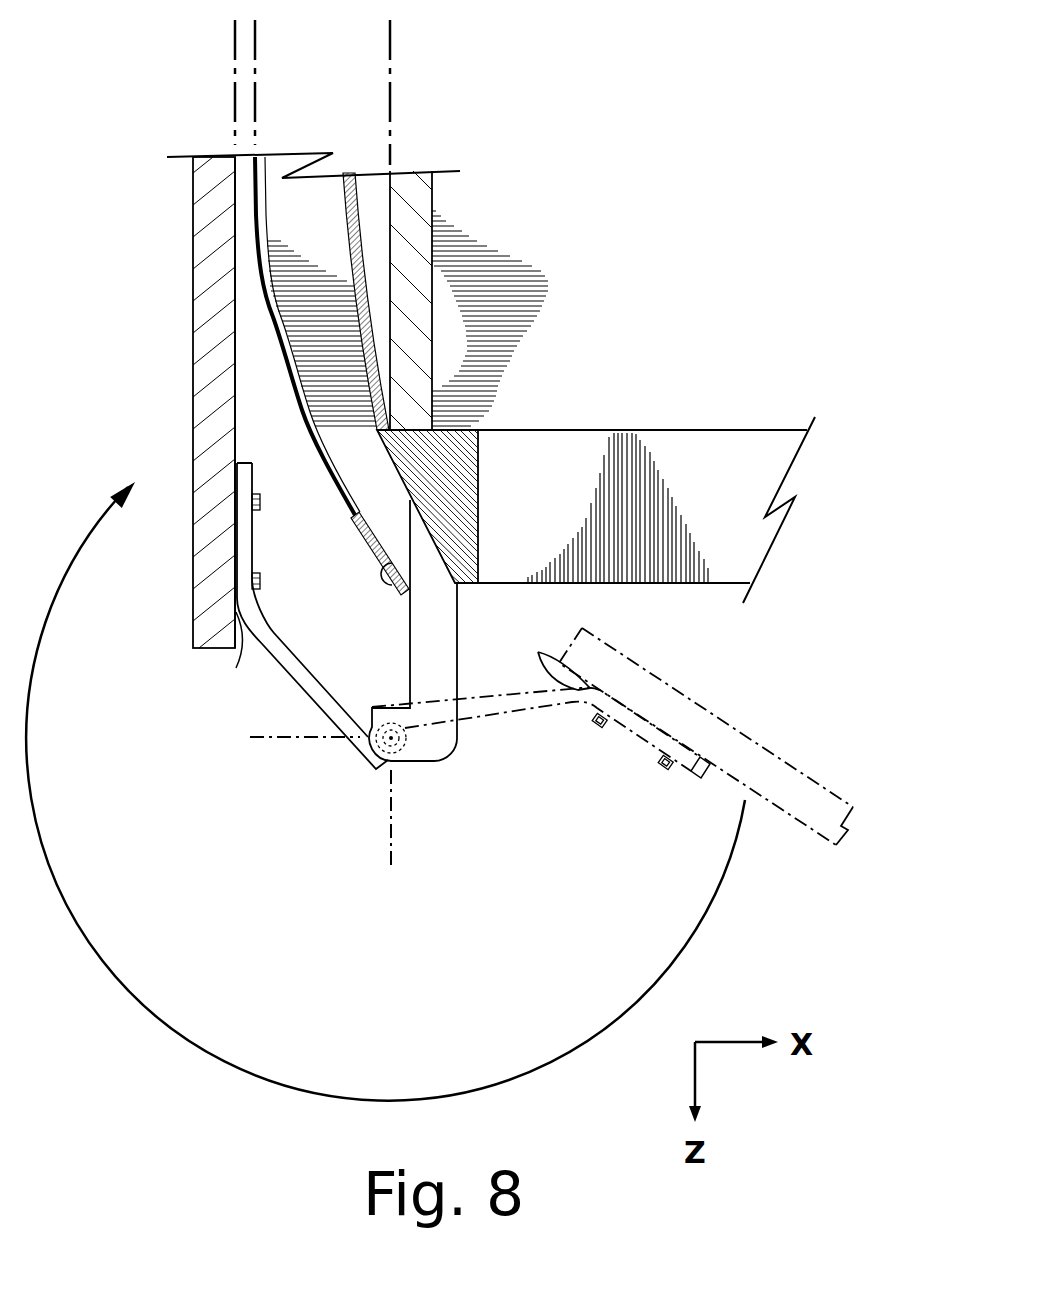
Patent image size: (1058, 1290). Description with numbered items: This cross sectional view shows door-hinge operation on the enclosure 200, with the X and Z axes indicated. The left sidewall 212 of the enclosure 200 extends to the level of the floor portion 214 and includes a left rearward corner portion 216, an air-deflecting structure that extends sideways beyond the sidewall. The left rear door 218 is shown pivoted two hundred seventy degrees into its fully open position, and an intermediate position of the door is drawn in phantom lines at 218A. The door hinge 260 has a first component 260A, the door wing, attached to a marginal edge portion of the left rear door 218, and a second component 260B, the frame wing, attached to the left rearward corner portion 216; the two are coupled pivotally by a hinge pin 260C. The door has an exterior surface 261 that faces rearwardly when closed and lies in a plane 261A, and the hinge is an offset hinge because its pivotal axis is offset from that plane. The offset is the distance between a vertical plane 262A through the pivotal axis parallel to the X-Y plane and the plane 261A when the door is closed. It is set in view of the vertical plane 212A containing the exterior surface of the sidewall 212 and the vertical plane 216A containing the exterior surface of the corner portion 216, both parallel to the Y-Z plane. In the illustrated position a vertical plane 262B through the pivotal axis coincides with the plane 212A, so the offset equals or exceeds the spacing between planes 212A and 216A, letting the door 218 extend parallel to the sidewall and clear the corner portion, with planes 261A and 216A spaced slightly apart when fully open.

The enclosure 200 is at (692, 130).
The left sidewall 212 is at (433, 193).
The vertical plane 212A is at (392, 35).
The floor portion 214 is at (647, 329).
The left rearward corner portion 216 is at (343, 524).
The vertical plane 216A is at (257, 27).
The left rear door 218 is at (193, 233).
The intermediate position of the left rear door 218A is at (703, 711).
The door hinge 260 is at (386, 648).
The first hinge component 260A is at (302, 683).
The second hinge component 260B is at (457, 623).
The hinge pin 260C is at (402, 741).
The exterior surface 261 is at (233, 342).
The plane of the exterior surface 261A is at (235, 37).
The vertical plane through the pivotal axis 262A is at (270, 740).
The vertical plane through the pivotal axis 262B is at (390, 853).